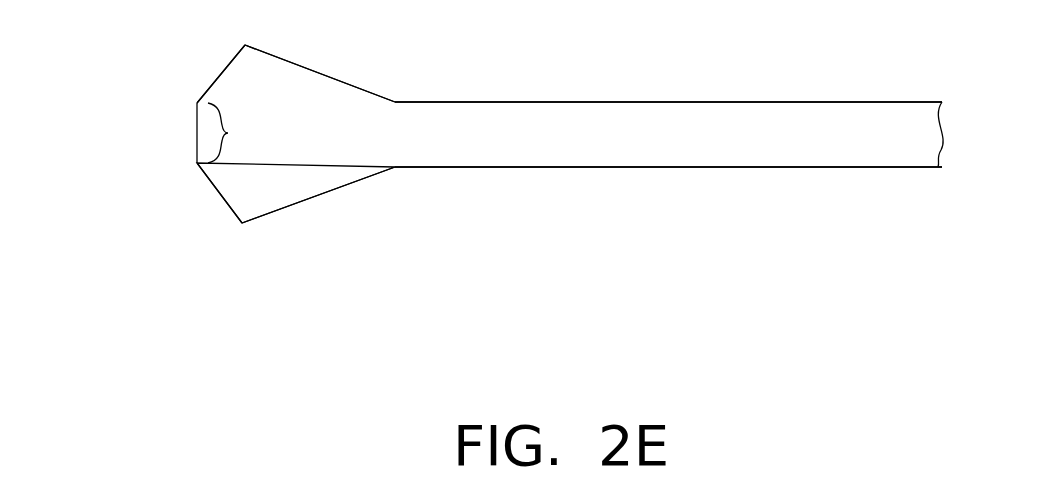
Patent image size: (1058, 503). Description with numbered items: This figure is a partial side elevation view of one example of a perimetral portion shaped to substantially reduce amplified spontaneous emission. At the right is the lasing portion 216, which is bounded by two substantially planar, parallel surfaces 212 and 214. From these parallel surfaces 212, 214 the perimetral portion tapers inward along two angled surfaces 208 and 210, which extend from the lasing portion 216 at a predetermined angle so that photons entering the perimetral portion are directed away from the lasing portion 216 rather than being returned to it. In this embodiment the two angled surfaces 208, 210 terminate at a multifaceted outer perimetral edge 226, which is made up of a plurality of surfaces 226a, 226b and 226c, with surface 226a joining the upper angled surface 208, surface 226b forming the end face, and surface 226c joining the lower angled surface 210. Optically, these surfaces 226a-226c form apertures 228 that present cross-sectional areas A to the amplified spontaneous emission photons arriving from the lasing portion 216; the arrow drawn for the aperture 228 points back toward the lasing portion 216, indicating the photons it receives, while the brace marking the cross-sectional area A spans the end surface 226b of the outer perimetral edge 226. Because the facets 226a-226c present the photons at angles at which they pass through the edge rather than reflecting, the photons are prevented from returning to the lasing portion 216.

The outer perimetral edge 226 is at (86, 176).
The surface 226a is at (223, 64).
The surface 226b is at (196, 121).
The surface 226c is at (223, 200).
The surface 208 is at (320, 72).
The surface 210 is at (307, 200).
The parallel surface 212 is at (718, 103).
The parallel surface 214 is at (655, 168).
The lasing portion 216 is at (670, 144).
The aperture 228 is at (258, 99).
The cross-sectional area A is at (228, 133).